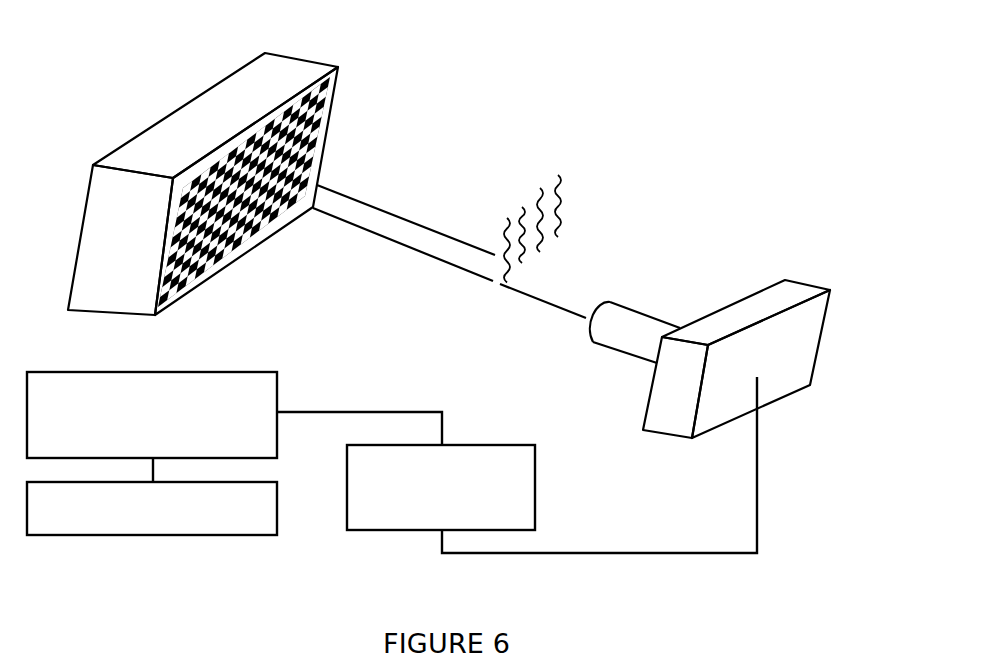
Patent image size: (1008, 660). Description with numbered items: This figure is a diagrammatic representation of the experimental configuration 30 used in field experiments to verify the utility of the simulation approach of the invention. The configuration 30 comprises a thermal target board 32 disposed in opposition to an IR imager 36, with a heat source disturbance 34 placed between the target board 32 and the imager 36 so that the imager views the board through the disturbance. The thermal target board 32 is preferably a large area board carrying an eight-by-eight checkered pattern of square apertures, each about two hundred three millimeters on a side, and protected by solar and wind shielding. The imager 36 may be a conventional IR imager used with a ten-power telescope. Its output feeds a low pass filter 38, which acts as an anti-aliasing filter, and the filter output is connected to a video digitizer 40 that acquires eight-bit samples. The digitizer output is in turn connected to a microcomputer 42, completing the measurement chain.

The experimental configuration 30 is at (464, 310).
The thermal target board 32 is at (245, 157).
The heat source disturbance 34 is at (603, 201).
The IR imager 36 is at (745, 318).
The low pass filter 38 is at (402, 532).
The video digitizer 40 is at (185, 368).
The microcomputer 42 is at (152, 551).